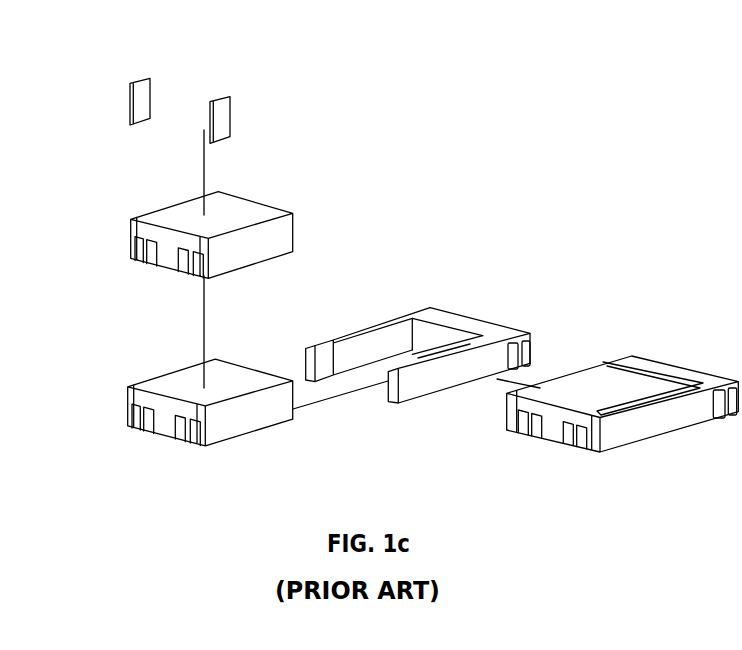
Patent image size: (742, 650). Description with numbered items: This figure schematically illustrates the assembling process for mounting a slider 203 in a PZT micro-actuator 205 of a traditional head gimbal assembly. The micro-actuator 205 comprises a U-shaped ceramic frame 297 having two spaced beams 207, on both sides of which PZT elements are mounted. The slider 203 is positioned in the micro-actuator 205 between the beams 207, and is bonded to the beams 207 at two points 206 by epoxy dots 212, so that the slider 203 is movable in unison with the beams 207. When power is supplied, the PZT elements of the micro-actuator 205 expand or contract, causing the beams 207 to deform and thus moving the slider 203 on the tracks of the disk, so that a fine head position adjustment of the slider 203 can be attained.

The slider 203 is at (235, 304).
The PZT micro-actuator 205 is at (523, 304).
The bonding points 206 is at (132, 219).
The beams 207 is at (368, 345).
The epoxy dots 212 is at (225, 121).
The U-shaped ceramic frame 297 is at (418, 356).